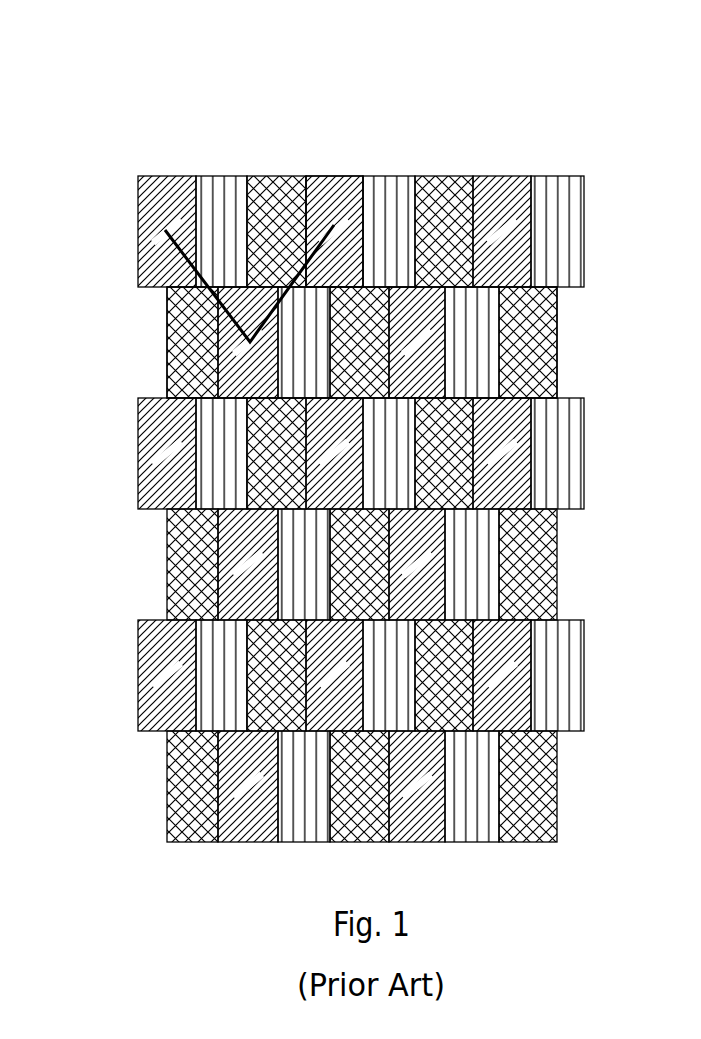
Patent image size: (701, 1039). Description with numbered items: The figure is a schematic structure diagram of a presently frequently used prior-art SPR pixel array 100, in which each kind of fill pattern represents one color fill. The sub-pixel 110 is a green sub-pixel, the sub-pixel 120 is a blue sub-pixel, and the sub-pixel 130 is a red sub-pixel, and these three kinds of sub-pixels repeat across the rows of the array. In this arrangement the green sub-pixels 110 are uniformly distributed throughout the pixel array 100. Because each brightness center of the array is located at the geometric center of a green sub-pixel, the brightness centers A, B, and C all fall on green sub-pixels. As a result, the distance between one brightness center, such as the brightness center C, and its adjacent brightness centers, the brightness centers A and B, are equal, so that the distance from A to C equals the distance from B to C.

The SPR pixel array 100 is at (550, 62).
The sub-pixel 110 is at (168, 177).
The sub-pixel 120 is at (220, 177).
The sub-pixel 130 is at (282, 177).
The brightness center A is at (140, 255).
The brightness center B is at (343, 177).
The brightness center C is at (168, 388).